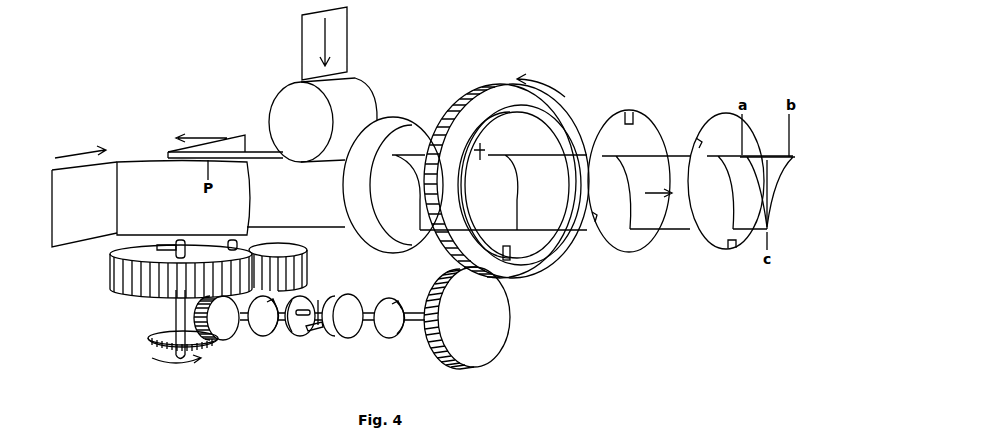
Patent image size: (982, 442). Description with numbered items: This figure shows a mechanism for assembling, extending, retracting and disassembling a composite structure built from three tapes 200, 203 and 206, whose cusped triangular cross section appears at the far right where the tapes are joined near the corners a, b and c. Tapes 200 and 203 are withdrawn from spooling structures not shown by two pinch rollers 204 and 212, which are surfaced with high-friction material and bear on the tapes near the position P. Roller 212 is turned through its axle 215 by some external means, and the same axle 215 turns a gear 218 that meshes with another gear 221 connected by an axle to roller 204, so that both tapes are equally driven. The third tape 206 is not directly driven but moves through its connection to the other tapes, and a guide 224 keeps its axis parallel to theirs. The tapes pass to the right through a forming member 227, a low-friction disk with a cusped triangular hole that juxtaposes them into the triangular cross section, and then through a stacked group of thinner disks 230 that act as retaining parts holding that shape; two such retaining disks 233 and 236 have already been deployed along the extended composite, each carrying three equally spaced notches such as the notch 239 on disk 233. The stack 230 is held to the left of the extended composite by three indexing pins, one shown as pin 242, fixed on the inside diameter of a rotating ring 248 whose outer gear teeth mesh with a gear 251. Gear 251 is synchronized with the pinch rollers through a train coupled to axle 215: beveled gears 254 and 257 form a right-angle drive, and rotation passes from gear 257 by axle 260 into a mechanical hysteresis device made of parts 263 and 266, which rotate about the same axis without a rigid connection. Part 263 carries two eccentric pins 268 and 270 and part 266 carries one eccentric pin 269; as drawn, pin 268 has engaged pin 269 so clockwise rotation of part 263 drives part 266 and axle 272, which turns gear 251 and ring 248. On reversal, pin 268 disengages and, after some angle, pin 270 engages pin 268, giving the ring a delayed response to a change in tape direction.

The tape 200 is at (742, 177).
The tape 203 is at (782, 177).
The pinch roller 204 is at (250, 152).
The tape 206 is at (767, 160).
The pinch roller 212 is at (140, 160).
The axle 215 is at (176, 310).
The gear 218 is at (110, 291).
The gear 221 is at (307, 266).
The guide 224 is at (377, 95).
The forming member 227 is at (388, 248).
The stacked group of disks 230 is at (493, 113).
The retaining part disk 233 is at (615, 238).
The retaining part disk 236 is at (717, 240).
The notch 239 is at (628, 112).
The indexing pin 242 is at (487, 144).
The rotating ring 248 is at (537, 278).
The gear 251 is at (510, 317).
The beveled gear 254 is at (155, 334).
The beveled gear 257 is at (228, 340).
The axle 260 is at (263, 320).
The hysteresis device part 263 is at (298, 332).
The hysteresis device part 266 is at (348, 332).
The eccentric pin 268 is at (316, 335).
The eccentric pin 269 is at (318, 300).
The eccentric pin 270 is at (304, 310).
The axle 272 is at (389, 325).